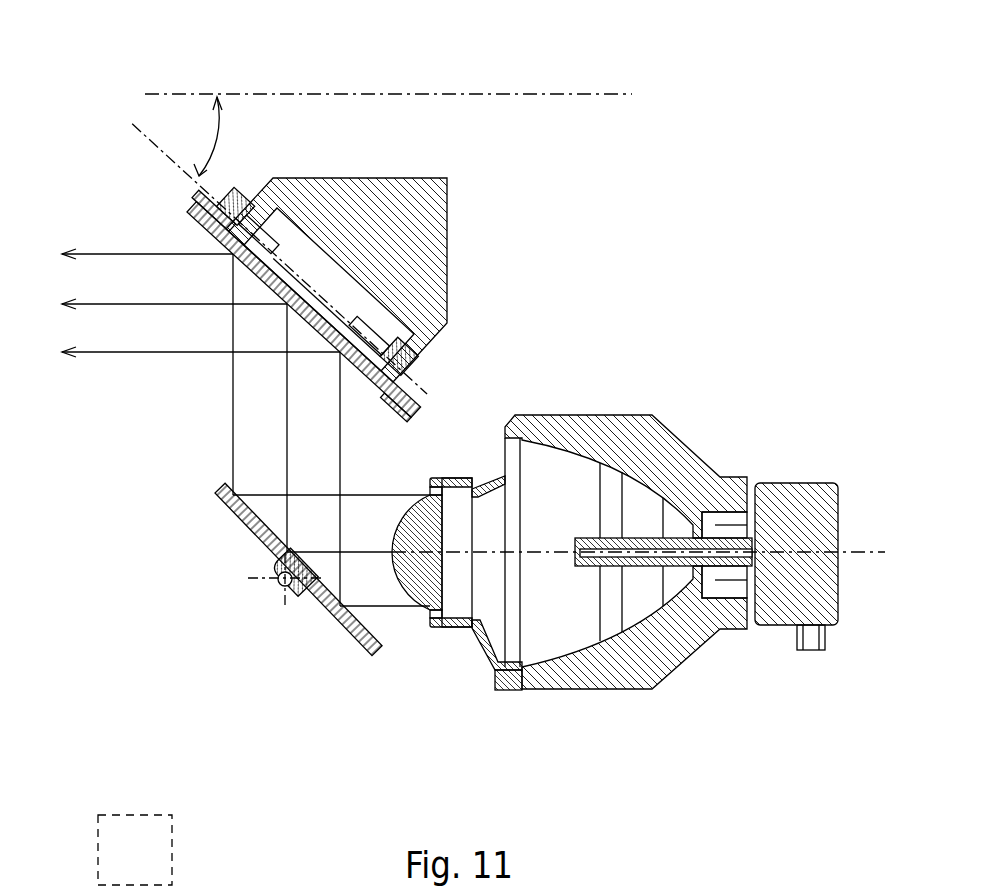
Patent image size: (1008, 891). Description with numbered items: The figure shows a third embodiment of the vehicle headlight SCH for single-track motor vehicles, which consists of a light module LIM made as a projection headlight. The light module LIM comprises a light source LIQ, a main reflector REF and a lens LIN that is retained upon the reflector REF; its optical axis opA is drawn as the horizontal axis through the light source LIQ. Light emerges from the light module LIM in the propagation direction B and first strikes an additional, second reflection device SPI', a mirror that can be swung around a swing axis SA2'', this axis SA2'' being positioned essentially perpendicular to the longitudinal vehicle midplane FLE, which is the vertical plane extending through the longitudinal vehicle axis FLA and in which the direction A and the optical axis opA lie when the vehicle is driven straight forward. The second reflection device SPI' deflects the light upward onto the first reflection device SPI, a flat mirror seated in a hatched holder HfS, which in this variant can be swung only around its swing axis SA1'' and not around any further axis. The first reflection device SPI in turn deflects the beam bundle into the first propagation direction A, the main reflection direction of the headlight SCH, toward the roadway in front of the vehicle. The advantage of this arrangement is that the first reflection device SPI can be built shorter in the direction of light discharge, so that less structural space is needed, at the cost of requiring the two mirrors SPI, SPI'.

The longitudinal vehicle axis FLA is at (613, 95).
The vehicle headlight SCH is at (782, 122).
The mirror holder HfS is at (447, 178).
The first reflection device SPI is at (233, 296).
The swing axis SA1'' is at (351, 259).
The first propagation direction A is at (178, 355).
The propagation direction B is at (400, 612).
The additional reflection device SPI' is at (218, 573).
The swing axis SA2'' is at (248, 649).
The lens LIN is at (470, 497).
The reflector REF is at (603, 415).
The light module LIM is at (700, 700).
The optical axis opA is at (538, 556).
The light source LIQ is at (777, 483).
The longitudinal vehicle midplane FLE is at (172, 855).